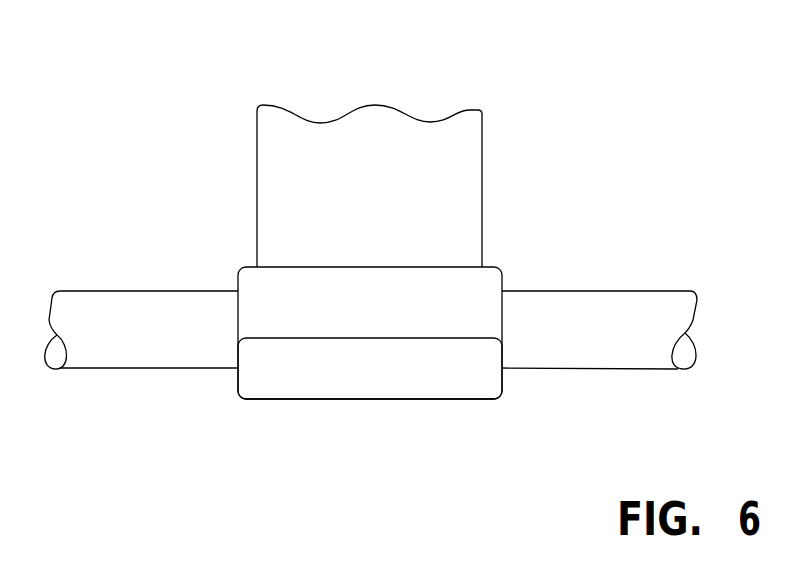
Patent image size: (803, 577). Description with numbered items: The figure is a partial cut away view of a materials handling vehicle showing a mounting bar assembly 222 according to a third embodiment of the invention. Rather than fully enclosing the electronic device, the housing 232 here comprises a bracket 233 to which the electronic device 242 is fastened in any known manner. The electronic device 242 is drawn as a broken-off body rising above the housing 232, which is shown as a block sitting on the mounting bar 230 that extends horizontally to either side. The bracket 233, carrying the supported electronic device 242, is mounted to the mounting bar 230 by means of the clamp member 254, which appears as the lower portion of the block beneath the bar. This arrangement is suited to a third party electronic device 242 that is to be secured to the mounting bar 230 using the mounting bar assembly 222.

The mounting bar assembly 222 is at (219, 237).
The mounting bar 230 is at (607, 340).
The housing 232 is at (508, 260).
The bracket 233 is at (260, 285).
The electronic device 242 is at (417, 140).
The clamp member 254 is at (305, 370).